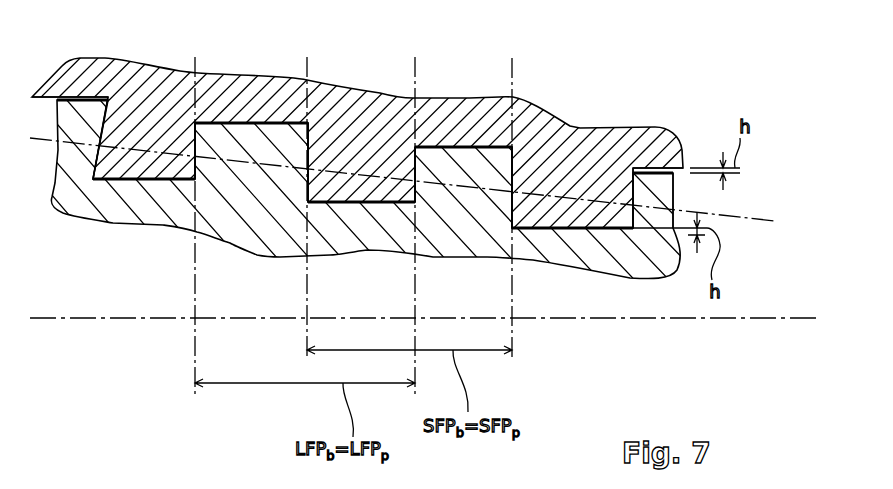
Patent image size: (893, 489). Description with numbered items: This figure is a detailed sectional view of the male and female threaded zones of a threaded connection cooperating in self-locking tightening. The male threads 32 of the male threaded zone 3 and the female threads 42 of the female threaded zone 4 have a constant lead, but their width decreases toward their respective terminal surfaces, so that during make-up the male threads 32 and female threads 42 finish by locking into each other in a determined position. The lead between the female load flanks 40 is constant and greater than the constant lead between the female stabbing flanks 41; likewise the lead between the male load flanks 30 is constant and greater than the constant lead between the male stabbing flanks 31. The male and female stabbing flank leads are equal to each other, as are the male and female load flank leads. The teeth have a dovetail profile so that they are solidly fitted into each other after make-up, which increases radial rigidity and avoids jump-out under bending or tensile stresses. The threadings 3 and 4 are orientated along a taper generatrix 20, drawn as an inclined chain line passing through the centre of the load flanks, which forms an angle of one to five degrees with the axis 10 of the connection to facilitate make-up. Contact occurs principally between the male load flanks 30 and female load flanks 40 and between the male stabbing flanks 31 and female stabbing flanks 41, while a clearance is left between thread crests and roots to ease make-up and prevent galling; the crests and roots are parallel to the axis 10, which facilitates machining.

The male threaded zone 3 is at (455, 204).
The female threaded zone 4 is at (461, 100).
The axis of the threaded connection 10 is at (715, 320).
The taper generatrix 20 is at (757, 217).
The male load flank 30 is at (190, 176).
The male stabbing flank 31 is at (306, 185).
The male thread 32 is at (230, 140).
The female load flank 40 is at (198, 138).
The female stabbing flank 41 is at (310, 125).
The female thread 42 is at (353, 183).